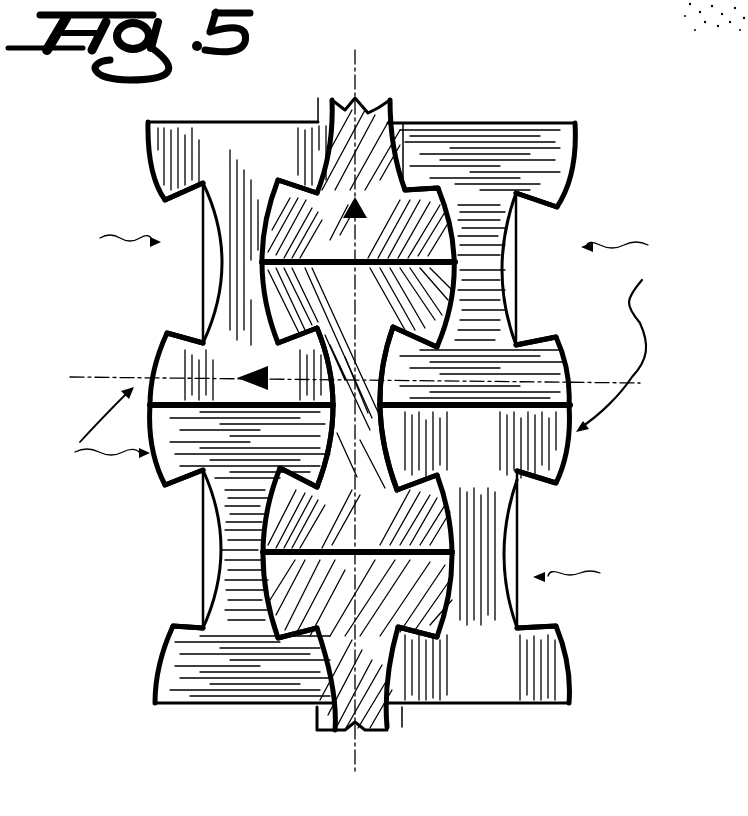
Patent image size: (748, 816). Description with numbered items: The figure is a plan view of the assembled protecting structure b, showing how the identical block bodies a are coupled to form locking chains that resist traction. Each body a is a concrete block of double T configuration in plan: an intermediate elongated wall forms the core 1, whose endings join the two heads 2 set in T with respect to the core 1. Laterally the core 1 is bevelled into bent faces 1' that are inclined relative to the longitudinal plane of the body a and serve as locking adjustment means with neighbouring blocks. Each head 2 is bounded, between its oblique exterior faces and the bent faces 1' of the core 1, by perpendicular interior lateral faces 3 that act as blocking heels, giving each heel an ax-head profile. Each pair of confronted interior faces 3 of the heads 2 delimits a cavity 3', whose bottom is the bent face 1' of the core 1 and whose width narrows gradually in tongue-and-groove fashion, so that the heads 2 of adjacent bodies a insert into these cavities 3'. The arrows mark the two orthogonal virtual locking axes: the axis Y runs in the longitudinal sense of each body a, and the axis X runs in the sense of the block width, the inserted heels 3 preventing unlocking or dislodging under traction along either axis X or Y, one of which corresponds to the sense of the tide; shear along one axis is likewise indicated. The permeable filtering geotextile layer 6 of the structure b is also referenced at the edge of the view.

The core of block 1 is at (350, 344).
The bent lateral faces of core 1' is at (343, 405).
The heads of block 2 is at (243, 132).
The interior lateral faces of the heads 3 is at (362, 366).
The tongue and groove cavities 3' is at (363, 458).
The permeable and filtering material layer 6 is at (667, 15).
The body of block a is at (348, 407).
The protecting structure b is at (350, 353).
The virtual locking axis in the sense of the width of the body X is at (339, 364).
The virtual locking axis in the longitudinal sense of the body Y is at (343, 405).